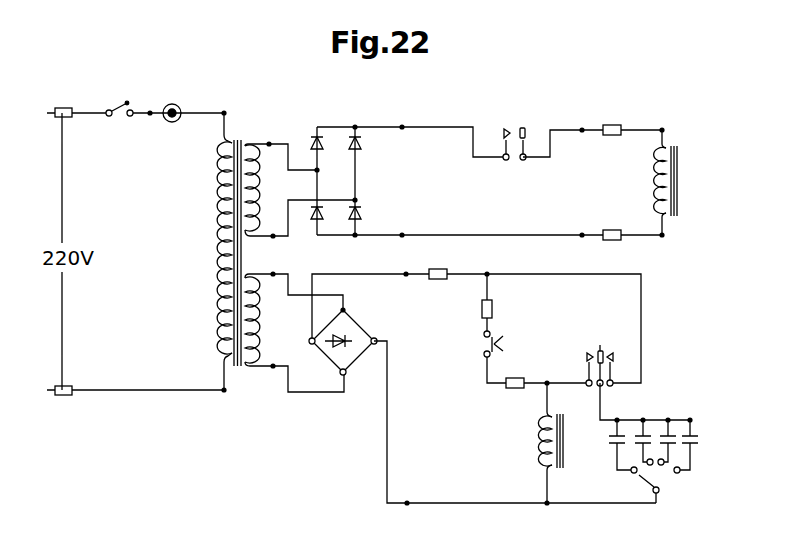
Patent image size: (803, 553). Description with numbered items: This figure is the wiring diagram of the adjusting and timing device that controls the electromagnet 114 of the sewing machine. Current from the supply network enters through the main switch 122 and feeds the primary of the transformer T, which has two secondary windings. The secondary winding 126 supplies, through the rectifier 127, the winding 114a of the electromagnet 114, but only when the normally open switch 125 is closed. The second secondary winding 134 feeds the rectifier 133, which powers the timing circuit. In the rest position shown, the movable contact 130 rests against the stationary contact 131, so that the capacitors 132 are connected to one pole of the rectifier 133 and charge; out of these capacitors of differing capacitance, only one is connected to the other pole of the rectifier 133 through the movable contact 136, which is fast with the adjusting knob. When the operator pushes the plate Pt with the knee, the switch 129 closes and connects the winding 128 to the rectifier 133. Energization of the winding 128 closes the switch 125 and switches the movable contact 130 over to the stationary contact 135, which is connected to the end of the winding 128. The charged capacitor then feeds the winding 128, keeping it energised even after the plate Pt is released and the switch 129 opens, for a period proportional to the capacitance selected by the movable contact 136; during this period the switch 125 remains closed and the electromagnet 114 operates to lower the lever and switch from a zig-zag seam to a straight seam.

The main switch 122 is at (108, 108).
The transformer T is at (246, 136).
The secondary winding 126 is at (262, 158).
The rectifier 127 is at (362, 182).
The switch 125 is at (510, 126).
The electromagnet 114 is at (675, 140).
The winding 114a is at (662, 180).
The secondary winding 134 is at (263, 366).
The rectifier 133 is at (357, 320).
The switch 129 is at (483, 345).
The plate Pt is at (500, 340).
The stationary contact 135 is at (589, 372).
The stationary contact 131 is at (612, 357).
The movable contact 130 is at (612, 374).
The capacitors 132 is at (649, 418).
The movable contact 136 is at (646, 482).
The winding 128 is at (544, 462).